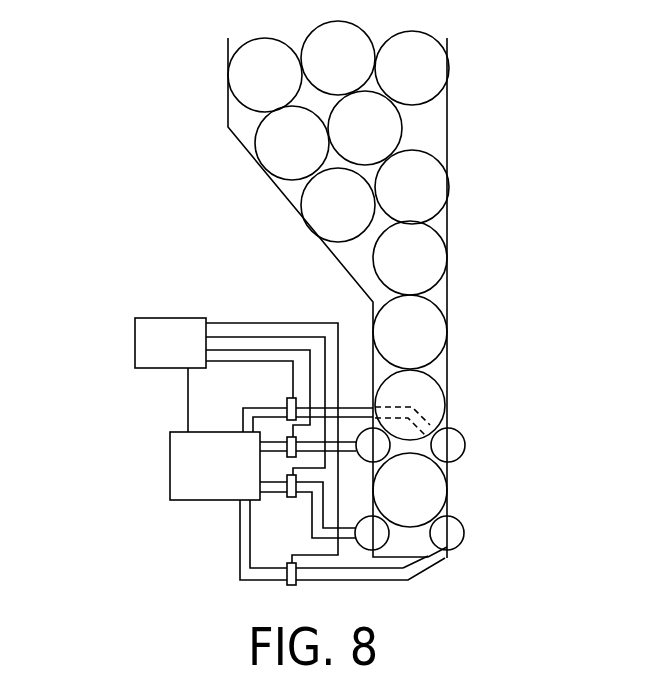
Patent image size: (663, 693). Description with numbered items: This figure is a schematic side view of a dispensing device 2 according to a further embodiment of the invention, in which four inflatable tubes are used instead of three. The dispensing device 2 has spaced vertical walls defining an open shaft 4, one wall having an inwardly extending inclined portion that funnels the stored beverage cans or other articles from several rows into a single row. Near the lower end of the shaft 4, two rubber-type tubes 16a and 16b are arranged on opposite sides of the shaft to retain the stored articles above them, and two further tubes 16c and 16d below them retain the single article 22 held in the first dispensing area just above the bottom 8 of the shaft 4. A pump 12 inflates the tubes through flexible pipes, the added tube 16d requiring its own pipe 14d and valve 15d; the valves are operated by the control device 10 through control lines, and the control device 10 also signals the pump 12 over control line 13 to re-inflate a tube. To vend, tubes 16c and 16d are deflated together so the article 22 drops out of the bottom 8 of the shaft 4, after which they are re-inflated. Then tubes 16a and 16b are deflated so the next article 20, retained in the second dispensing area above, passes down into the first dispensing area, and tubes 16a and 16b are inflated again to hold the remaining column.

The dispensing device 2 is at (258, 298).
The shaft 4 is at (433, 128).
The bottom 8 is at (487, 570).
The control device 10 is at (195, 417).
The pump 12 is at (230, 471).
The control line 13 is at (135, 400).
The pipe 14d is at (275, 540).
The valve 15d is at (233, 587).
The tube 16a is at (530, 432).
The tube 16b is at (479, 413).
The tube 16c is at (437, 565).
The tube 16d is at (524, 536).
The article 20 is at (476, 389).
The article 22 is at (468, 490).